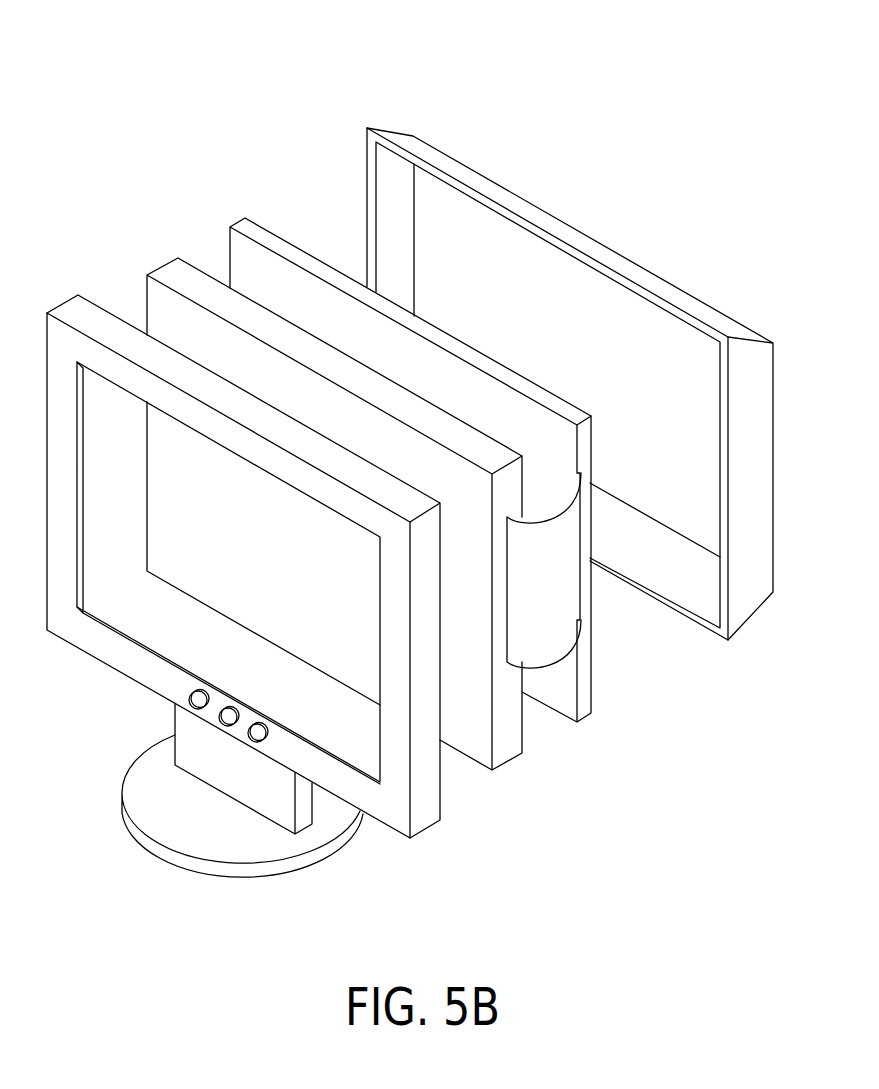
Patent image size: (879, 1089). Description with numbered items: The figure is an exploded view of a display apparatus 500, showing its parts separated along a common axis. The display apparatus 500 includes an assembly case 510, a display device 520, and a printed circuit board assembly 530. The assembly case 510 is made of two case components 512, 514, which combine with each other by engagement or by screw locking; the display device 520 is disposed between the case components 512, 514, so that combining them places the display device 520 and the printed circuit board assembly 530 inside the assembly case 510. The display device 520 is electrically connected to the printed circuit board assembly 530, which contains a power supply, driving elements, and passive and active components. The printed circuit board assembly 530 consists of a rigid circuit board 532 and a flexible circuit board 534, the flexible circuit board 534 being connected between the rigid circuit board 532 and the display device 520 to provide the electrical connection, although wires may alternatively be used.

The display apparatus 500 is at (692, 61).
The assembly case 510 is at (223, 106).
The case component 512 is at (73, 313).
The case component 514 is at (402, 142).
The display device 520 is at (504, 720).
The printed circuit board assembly 530 is at (675, 648).
The rigid circuit board 532 is at (580, 700).
The flexible circuit board 534 is at (555, 599).